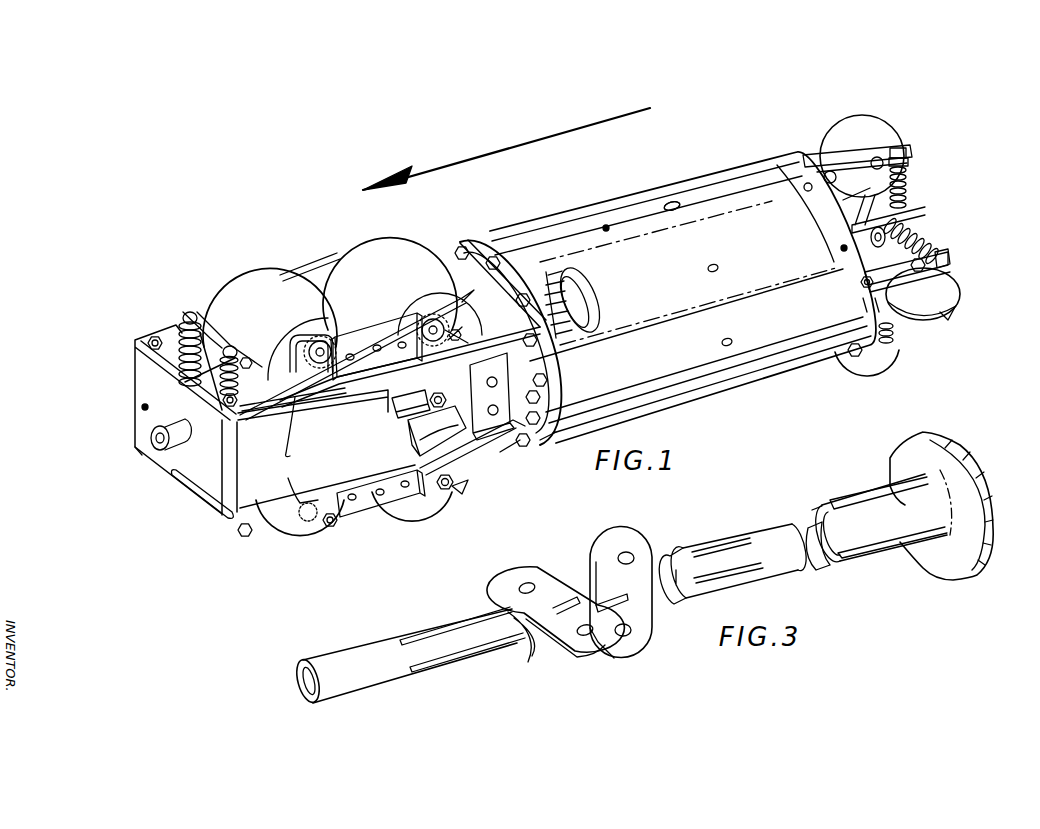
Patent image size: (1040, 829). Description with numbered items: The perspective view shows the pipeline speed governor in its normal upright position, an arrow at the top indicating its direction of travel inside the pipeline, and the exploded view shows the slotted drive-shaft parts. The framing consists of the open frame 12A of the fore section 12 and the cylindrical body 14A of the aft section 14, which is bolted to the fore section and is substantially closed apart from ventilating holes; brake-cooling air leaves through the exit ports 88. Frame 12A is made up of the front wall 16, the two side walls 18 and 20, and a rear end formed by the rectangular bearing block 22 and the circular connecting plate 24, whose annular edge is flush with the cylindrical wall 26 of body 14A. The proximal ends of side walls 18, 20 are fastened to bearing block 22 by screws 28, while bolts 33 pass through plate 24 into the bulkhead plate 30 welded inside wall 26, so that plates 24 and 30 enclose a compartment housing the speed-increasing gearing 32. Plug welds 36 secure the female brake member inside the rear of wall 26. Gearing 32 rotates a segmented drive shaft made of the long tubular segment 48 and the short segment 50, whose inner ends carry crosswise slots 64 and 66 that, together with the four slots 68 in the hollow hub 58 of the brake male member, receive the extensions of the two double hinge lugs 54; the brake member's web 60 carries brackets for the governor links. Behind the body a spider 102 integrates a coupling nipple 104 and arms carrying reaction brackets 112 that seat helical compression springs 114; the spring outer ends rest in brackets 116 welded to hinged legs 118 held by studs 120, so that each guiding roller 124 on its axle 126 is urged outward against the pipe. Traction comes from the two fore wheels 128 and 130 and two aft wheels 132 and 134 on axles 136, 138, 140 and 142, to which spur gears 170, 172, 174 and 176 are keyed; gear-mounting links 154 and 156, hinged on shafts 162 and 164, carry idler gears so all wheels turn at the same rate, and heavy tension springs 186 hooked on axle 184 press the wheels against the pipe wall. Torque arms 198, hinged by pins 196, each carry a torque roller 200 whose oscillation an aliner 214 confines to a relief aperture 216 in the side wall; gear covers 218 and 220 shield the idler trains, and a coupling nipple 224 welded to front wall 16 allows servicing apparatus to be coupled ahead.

In FIG. 1, the fore section 12 is at (193, 306).
In FIG. 1, the open frame 12A is at (142, 408).
In FIG. 1, the aft section 14 is at (543, 214).
In FIG. 1, the cylindrical body 14A is at (606, 226).
In FIG. 1, the front wall 16 is at (150, 416).
In FIG. 1, the side wall 18 is at (505, 452).
In FIG. 1, the side wall 20 is at (170, 380).
In FIG. 1, the rectangular bearing block 22 is at (492, 252).
In FIG. 1, the circular connecting plate 24 is at (500, 244).
In FIG. 1, the cylindrical wall 26 is at (666, 310).
In FIG. 1, the screws 28 is at (548, 440).
In FIG. 1, the bulkhead plate 30 is at (592, 292).
In FIG. 1, the gearing 32 is at (588, 312).
In FIG. 1, the bolts 33 is at (522, 297).
In FIG. 1, the plug welds 36 is at (842, 246).
In FIG. 3, the tubular shaft segment 48 is at (423, 673).
In FIG. 3, the short shaft segment 50 is at (748, 537).
In FIG. 3, the double hinge lugs 54 is at (606, 661).
In FIG. 3, the hollow elongated hub 58 is at (897, 558).
In FIG. 3, the web 60 is at (966, 456).
In FIG. 3, the slots 64 is at (523, 656).
In FIG. 3, the slots 66 is at (662, 606).
In FIG. 3, the slots 68 is at (815, 565).
In FIG. 1, the cooling air exit ports 88 is at (711, 264).
In FIG. 1, the spider 102 is at (924, 206).
In FIG. 1, the coupling nipple 104 is at (922, 233).
In FIG. 1, the reaction brackets 112 is at (928, 216).
In FIG. 1, the helical compression springs 114 is at (910, 190).
In FIG. 1, the brackets 116 is at (907, 161).
In FIG. 1, the hinged legs 118 is at (857, 164).
In FIG. 1, the studs 120 is at (862, 283).
In FIG. 1, the guiding rollers 124 is at (906, 351).
In FIG. 1, the axle 126 is at (897, 150).
In FIG. 1, the fore wheel 128 is at (300, 540).
In FIG. 1, the fore wheel 130 is at (235, 302).
In FIG. 1, the aft wheel 132 is at (420, 513).
In FIG. 1, the aft wheel 134 is at (349, 269).
In FIG. 1, the wheel axle 136 is at (332, 523).
In FIG. 1, the wheel axle 138 is at (322, 340).
In FIG. 1, the wheel axle 140 is at (453, 485).
In FIG. 1, the wheel axle 142 is at (428, 322).
In FIG. 1, the gear-mounting links 154 is at (470, 456).
In FIG. 1, the gear-mounting links 156 is at (452, 337).
In FIG. 1, the shaft 162 is at (499, 410).
In FIG. 1, the shaft 164 is at (498, 382).
In FIG. 1, the spur gear 170 is at (294, 486).
In FIG. 1, the spur gear 172 is at (285, 450).
In FIG. 1, the spur gear 174 is at (434, 497).
In FIG. 1, the spur gear 176 is at (428, 318).
In FIG. 1, the axle 184 is at (178, 325).
In FIG. 1, the helical tension springs 186 is at (212, 350).
In FIG. 1, the pins 196 is at (148, 341).
In FIG. 1, the torque arms 198 is at (310, 461).
In FIG. 1, the torque roller 200 is at (452, 444).
In FIG. 1, the aliner 214 is at (405, 400).
In FIG. 1, the relief aperture 216 is at (440, 393).
In FIG. 1, the gear cover 218 is at (372, 356).
In FIG. 1, the gear cover 220 is at (375, 501).
In FIG. 1, the coupling nipple 224 is at (160, 448).